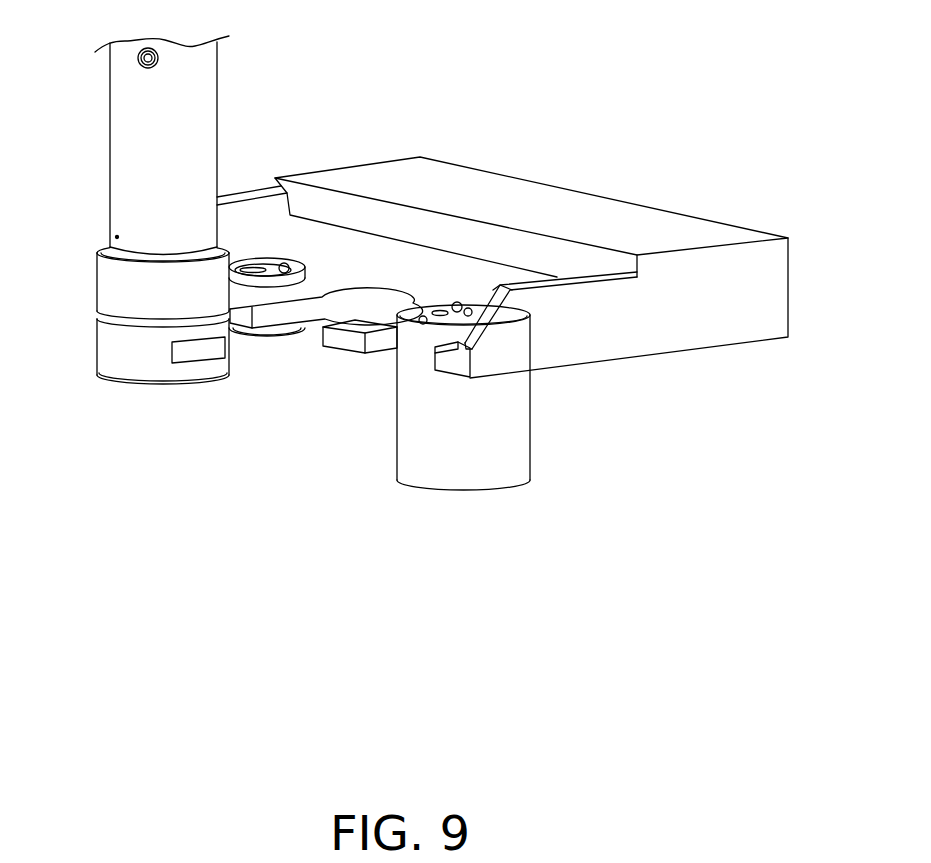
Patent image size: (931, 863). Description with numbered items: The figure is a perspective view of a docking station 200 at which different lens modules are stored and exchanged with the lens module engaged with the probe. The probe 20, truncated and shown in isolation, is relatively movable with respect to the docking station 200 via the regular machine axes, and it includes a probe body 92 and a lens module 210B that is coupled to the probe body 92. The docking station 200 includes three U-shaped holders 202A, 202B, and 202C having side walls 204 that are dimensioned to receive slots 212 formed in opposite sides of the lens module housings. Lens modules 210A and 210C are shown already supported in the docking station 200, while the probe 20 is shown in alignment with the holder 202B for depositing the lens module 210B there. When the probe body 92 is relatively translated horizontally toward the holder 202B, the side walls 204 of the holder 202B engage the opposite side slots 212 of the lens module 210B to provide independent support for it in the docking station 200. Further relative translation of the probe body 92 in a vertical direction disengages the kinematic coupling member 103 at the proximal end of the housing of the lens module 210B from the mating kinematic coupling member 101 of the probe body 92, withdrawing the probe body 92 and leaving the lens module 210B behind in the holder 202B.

The probe 20 is at (222, 73).
The probe body 92 is at (110, 143).
The kinematic coupling member 101 is at (97, 313).
The kinematic coupling member 103 is at (145, 318).
The docking station 200 is at (630, 223).
The U-shaped holder 202A is at (292, 285).
The U-shaped holder 202B is at (368, 304).
The U-shaped holder 202C is at (397, 316).
The side walls 204 is at (273, 313).
The lens module 210A is at (282, 266).
The lens module 210B is at (97, 362).
The lens module 210C is at (518, 413).
The slots 212 is at (182, 352).